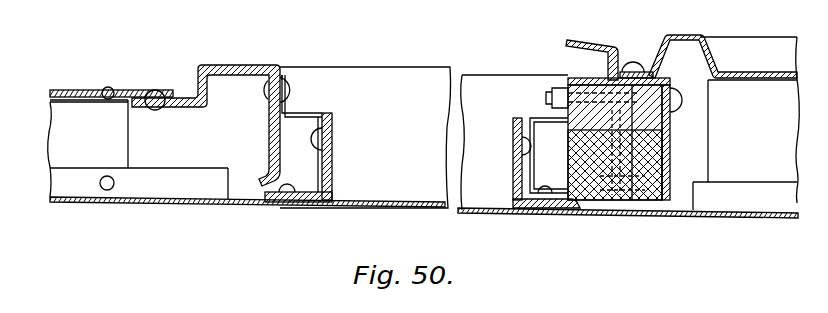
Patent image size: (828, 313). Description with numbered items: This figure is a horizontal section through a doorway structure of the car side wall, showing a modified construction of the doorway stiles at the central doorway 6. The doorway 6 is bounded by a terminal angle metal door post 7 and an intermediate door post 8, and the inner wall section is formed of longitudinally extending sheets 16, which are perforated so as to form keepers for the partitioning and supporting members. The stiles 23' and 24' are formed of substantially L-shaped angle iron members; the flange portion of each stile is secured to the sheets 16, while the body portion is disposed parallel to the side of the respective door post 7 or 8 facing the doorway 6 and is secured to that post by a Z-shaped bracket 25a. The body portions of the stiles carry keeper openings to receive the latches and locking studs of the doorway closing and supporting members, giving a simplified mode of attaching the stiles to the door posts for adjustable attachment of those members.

The terminal angle metal door post 7 is at (255, 66).
The longitudinally extending sheets 16 is at (222, 207).
The central doorway 6 is at (365, 137).
The doorway stile 24' is at (328, 138).
The Z-shaped bracket 25a is at (300, 112).
The doorway stile 23' is at (520, 142).
The intermediate door post 8 is at (588, 100).